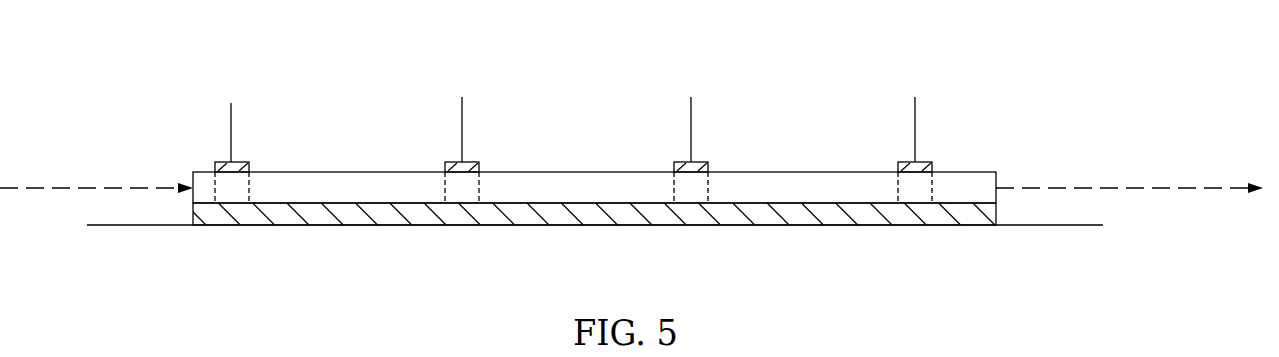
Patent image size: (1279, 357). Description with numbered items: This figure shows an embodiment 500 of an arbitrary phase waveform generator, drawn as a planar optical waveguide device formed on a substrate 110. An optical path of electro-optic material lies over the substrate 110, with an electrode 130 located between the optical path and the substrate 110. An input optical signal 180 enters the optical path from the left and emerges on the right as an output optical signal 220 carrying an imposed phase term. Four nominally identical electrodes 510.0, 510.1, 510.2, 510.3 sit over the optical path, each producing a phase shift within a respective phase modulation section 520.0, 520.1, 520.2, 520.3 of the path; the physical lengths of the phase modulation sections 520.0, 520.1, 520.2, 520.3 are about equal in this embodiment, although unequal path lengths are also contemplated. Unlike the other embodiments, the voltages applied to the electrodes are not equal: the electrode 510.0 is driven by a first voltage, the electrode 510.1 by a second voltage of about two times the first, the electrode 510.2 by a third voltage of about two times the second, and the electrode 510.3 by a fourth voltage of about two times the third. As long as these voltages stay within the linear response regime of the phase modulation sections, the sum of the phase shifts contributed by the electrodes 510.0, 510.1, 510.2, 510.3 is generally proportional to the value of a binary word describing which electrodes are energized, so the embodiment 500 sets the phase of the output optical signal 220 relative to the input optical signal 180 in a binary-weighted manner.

The arbitrary phase waveform generator embodiment 500 is at (168, 60).
The substrate 110 is at (141, 227).
The electrode 130 is at (970, 218).
The input optical signal 180 is at (73, 191).
The output optical signal 220 is at (1136, 191).
The electrode 510.0 is at (220, 161).
The electrode 510.1 is at (448, 161).
The electrode 510.2 is at (682, 161).
The electrode 510.3 is at (905, 161).
The phase modulation section 520.0 is at (230, 194).
The phase modulation section 520.1 is at (468, 194).
The phase modulation section 520.2 is at (692, 194).
The phase modulation section 520.3 is at (918, 194).